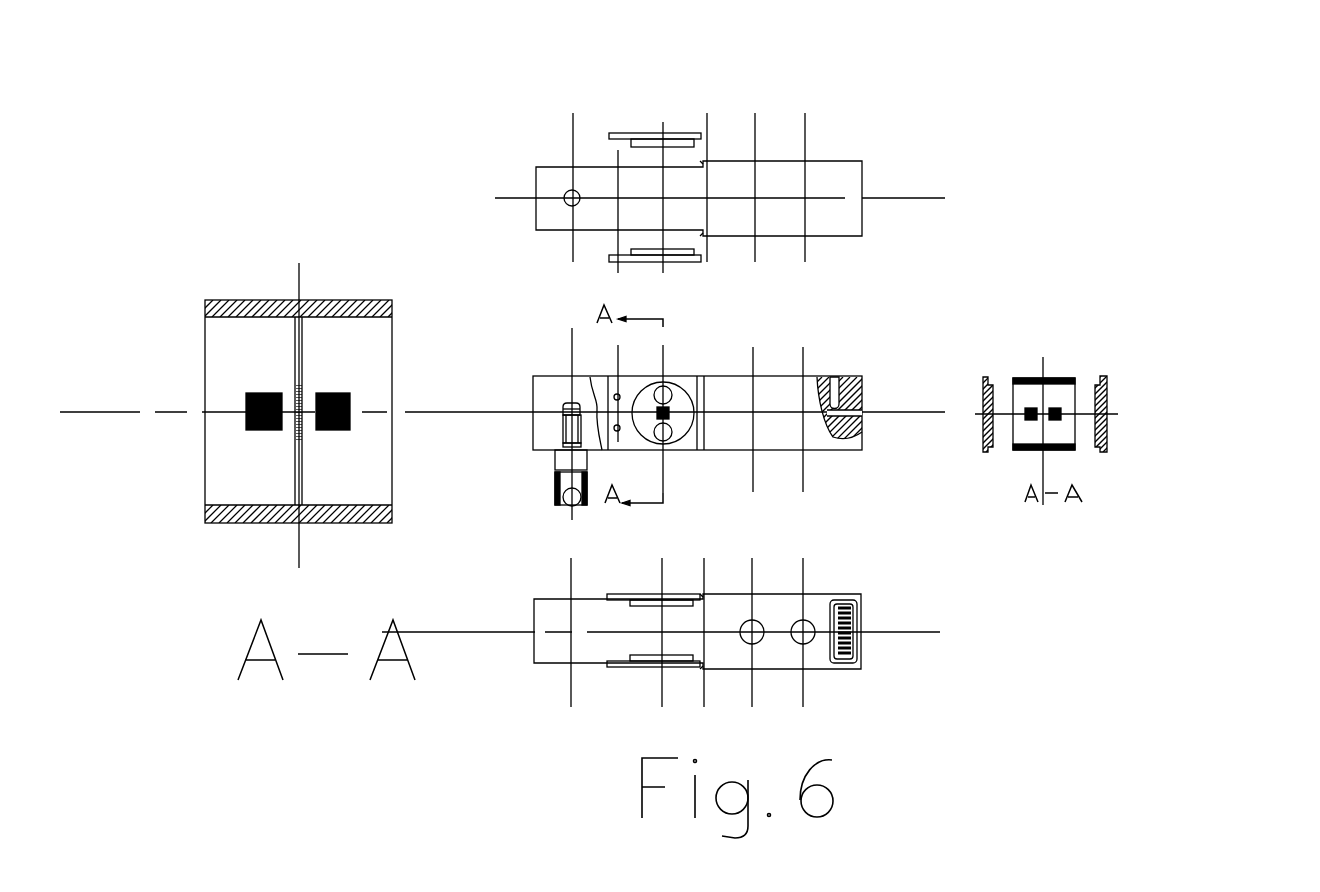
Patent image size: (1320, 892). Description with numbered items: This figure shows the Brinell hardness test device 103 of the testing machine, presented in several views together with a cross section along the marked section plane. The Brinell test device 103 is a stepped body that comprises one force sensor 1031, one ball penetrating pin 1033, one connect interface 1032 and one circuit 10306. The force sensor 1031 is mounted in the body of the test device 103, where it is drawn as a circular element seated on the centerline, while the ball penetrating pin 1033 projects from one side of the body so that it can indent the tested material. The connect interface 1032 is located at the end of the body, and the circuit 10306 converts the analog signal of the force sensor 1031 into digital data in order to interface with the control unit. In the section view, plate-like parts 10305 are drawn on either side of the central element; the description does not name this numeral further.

The Brinell test device 103 is at (787, 172).
The force sensor 1031 is at (680, 397).
The connect interface 1032 is at (856, 622).
The ball penetrating pin 1033 is at (557, 488).
The side plate 10305 is at (1071, 438).
The circuit 10306 is at (1095, 448).